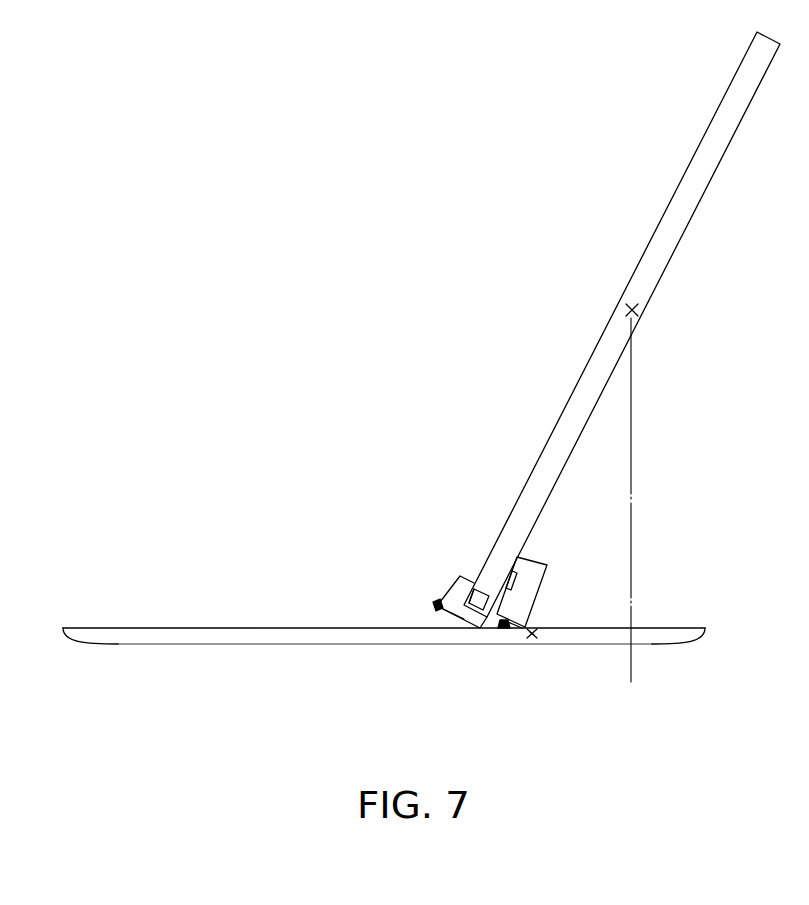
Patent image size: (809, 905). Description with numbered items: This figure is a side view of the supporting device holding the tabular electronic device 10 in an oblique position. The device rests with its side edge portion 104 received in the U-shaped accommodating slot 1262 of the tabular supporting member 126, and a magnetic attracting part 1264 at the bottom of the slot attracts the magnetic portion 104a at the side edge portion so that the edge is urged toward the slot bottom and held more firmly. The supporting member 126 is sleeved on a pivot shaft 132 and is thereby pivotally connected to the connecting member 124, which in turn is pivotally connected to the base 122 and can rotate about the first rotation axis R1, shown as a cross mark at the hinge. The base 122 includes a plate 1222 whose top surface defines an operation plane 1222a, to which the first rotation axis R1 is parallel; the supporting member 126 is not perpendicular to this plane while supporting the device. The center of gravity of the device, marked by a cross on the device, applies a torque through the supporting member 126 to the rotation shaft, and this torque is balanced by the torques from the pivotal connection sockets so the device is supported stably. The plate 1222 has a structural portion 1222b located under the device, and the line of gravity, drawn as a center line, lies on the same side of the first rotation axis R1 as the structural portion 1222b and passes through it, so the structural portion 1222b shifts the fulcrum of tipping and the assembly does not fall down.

The tabular electronic device 10 is at (668, 207).
The side edge portion 104 is at (489, 590).
The magnetic portion 104a is at (466, 591).
The accommodating slot 1262 is at (478, 572).
The magnetic attracting part 1264 is at (463, 606).
The pivot shaft 132 is at (435, 604).
The supporting member 126 is at (527, 591).
The connecting member 124 is at (529, 637).
The first rotation axis R1 is at (535, 638).
The plate 1222 is at (384, 673).
The base 122 is at (238, 641).
The operation plane 1222a is at (177, 628).
The structural portion 1222b is at (608, 638).